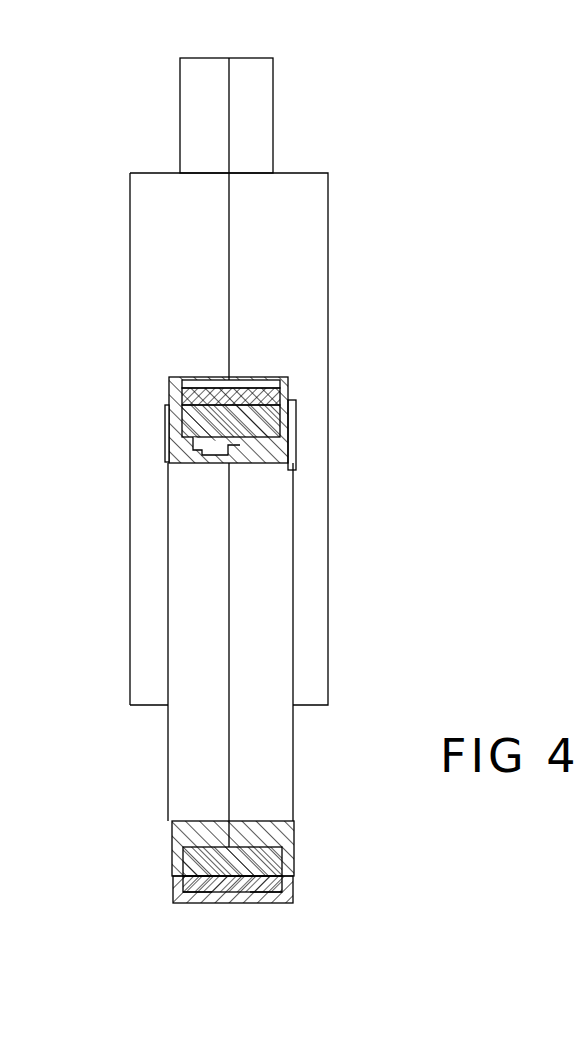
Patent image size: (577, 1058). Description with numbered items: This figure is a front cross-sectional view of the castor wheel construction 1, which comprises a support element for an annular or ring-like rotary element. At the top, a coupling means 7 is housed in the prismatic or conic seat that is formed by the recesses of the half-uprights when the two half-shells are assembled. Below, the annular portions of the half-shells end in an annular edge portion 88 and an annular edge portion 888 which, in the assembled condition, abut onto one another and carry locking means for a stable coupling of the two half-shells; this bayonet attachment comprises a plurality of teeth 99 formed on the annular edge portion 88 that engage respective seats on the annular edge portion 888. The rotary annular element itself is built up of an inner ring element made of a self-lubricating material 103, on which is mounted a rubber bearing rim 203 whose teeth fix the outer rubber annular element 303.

The castor wheel construction 1 is at (413, 207).
The coupling means 7 is at (258, 137).
The annular edge portion 88 is at (277, 455).
The teeth 99 is at (170, 403).
The inner ring element of self-lubricating material 103 is at (283, 428).
The rubber bearing rim 203 is at (283, 397).
The rubber annular element 303 is at (265, 382).
The annular edge portion 888 is at (167, 463).